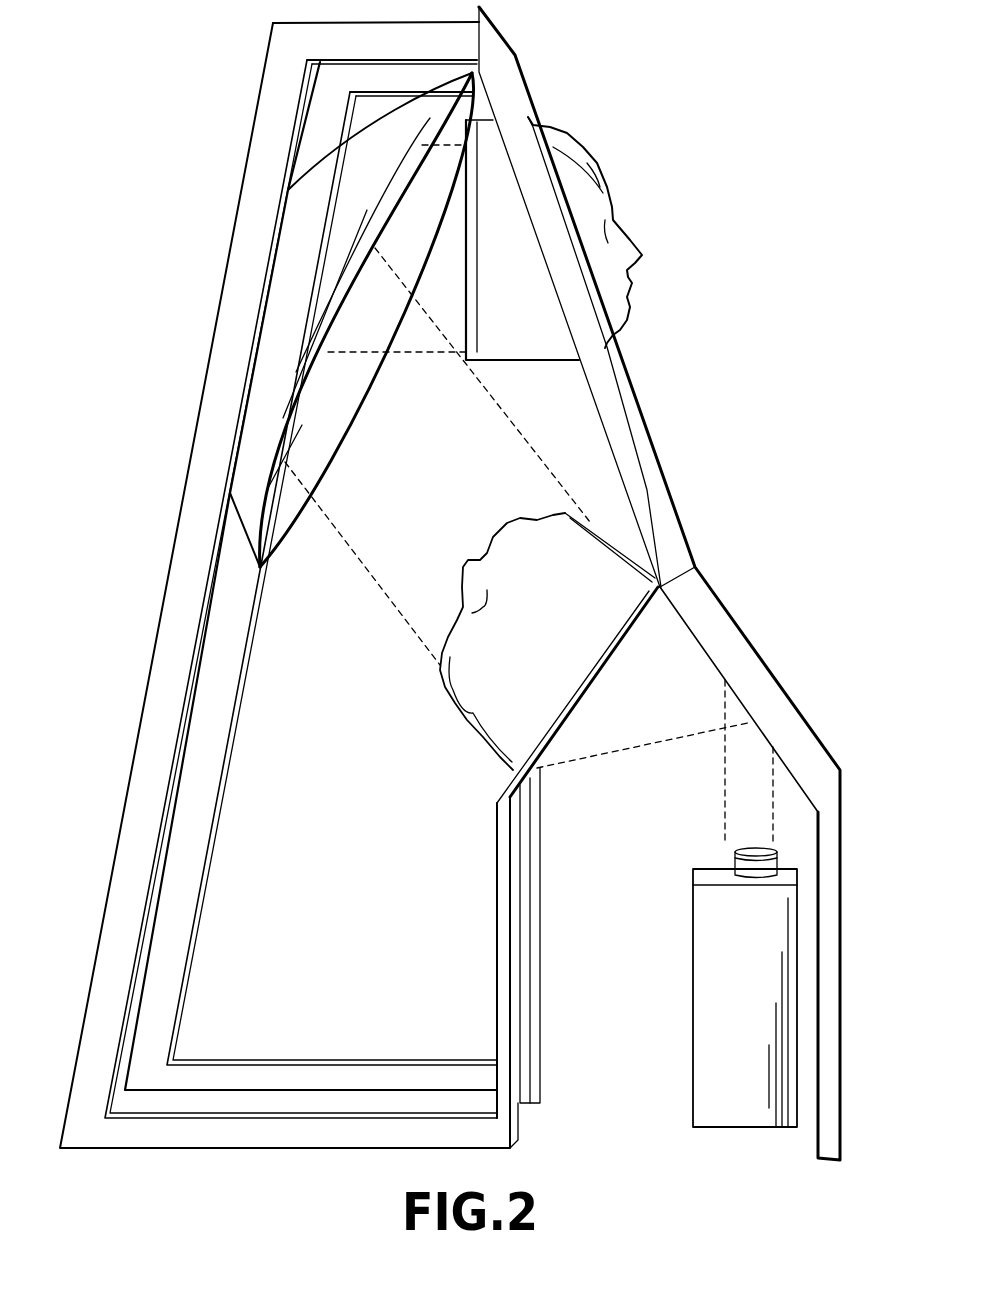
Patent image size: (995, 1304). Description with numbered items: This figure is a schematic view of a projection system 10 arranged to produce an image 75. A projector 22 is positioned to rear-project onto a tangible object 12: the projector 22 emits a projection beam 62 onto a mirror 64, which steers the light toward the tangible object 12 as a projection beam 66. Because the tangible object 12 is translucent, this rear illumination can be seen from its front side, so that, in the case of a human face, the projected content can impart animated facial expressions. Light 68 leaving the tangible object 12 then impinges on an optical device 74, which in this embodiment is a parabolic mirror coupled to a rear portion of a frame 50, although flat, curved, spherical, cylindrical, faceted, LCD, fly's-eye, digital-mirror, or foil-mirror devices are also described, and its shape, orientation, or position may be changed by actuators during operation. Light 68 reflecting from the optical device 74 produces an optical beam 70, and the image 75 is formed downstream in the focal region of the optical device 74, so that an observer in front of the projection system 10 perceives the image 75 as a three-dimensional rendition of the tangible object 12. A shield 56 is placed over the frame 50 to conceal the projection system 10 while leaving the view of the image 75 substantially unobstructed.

The projection system 10 is at (708, 128).
The tangible object 12 is at (445, 700).
The projector 22 is at (693, 1000).
The frame 50 is at (132, 752).
The shield 56 is at (783, 712).
The projection beam 62 is at (728, 793).
The mirror 64 is at (710, 668).
The projection beam 66 is at (640, 722).
The light 68 is at (437, 483).
The optical beam 70 is at (456, 295).
The optical device 74 is at (336, 235).
The image 75 is at (600, 165).